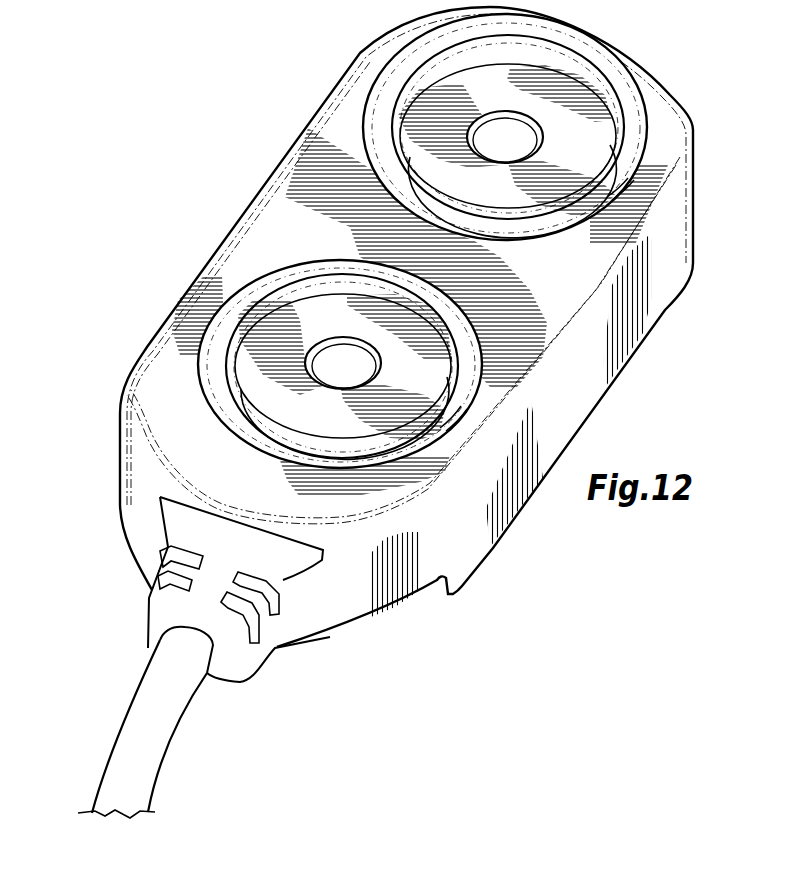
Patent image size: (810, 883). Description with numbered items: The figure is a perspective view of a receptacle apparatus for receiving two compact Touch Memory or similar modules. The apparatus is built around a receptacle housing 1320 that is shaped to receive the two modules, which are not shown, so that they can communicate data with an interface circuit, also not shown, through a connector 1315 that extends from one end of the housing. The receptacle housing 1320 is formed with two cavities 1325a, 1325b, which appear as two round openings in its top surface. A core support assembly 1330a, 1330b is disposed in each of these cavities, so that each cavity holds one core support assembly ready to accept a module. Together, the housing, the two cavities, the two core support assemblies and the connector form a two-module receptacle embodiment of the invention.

The connector 1315 is at (143, 698).
The receptacle housing 1320 is at (470, 547).
The cavity 1325a is at (397, 70).
The cavity 1325b is at (253, 290).
The core support assembly 1330a is at (615, 107).
The core support assembly 1330b is at (213, 363).